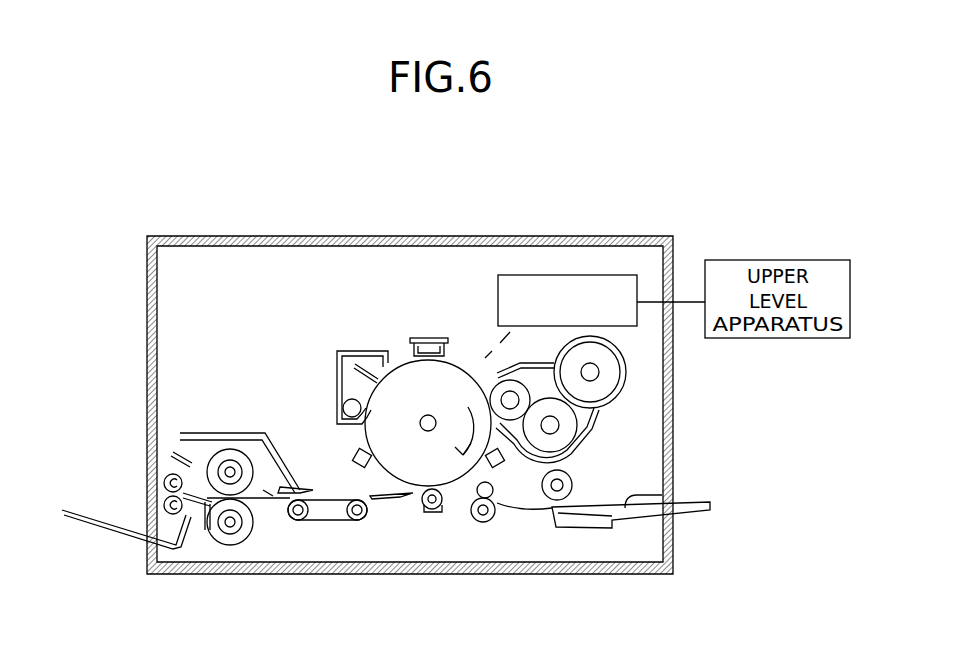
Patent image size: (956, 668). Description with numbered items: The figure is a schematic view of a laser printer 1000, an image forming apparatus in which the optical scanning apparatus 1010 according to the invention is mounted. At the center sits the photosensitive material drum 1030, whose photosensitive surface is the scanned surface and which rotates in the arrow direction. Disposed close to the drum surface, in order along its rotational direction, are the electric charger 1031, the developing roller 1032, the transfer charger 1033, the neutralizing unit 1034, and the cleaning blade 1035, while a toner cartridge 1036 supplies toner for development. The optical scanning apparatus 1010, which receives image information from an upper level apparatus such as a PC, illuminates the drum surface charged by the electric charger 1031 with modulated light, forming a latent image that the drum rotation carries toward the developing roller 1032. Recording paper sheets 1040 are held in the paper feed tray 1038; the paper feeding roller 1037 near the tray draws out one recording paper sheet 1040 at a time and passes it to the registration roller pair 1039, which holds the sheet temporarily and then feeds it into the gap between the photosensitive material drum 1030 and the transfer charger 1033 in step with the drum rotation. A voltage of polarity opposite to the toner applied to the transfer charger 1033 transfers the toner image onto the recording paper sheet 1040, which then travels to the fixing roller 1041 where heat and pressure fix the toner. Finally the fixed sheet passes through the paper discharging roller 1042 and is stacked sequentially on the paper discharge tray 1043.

The laser printer 1000 is at (410, 360).
The optical scanning apparatus 1010 is at (567, 254).
The photosensitive material drum 1030 is at (345, 312).
The electric charger 1031 is at (385, 260).
The developing roller 1032 is at (445, 281).
The transfer charger 1033 is at (412, 556).
The neutralizing unit 1034 is at (326, 542).
The cleaning blade 1035 is at (228, 364).
The toner cartridge 1036 is at (625, 399).
The paper feeding roller 1037 is at (646, 470).
The paper feed tray 1038 is at (650, 534).
The registration roller pair 1039 is at (530, 553).
The recording paper sheet 1040 is at (696, 491).
The fixing roller 1041 is at (157, 473).
The paper discharging roller 1042 is at (122, 475).
The paper discharge tray 1043 is at (119, 544).